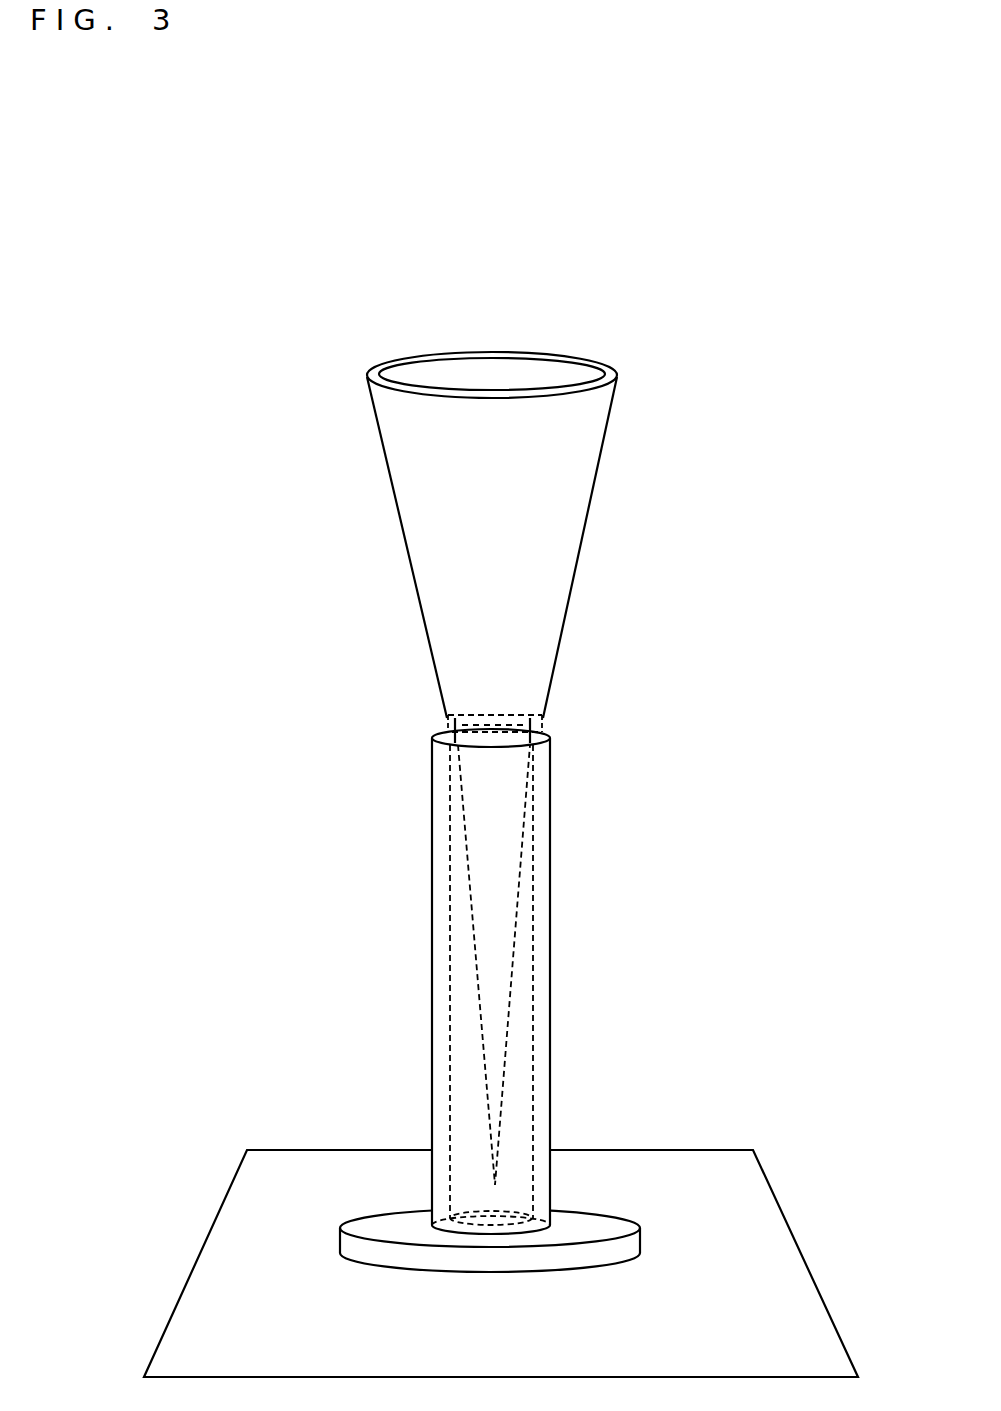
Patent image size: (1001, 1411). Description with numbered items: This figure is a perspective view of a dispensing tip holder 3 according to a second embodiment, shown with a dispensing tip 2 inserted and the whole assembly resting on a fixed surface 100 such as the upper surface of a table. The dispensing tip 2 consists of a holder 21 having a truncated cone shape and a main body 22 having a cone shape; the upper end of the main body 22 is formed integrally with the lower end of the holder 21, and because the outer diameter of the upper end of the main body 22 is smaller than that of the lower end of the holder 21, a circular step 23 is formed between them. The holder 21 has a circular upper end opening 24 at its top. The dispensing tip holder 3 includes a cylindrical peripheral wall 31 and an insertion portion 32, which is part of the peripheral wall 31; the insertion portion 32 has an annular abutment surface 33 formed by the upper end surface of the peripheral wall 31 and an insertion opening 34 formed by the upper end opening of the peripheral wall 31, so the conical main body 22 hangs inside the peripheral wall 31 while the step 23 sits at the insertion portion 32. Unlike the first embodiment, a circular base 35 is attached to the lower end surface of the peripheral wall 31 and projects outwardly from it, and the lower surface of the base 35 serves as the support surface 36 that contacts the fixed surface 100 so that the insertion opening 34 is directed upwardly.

The dispensing tip 2 is at (427, 728).
The dispensing tip holder 3 is at (506, 971).
The holder 21 is at (483, 493).
The main body 22 is at (467, 888).
The circular step 23 is at (453, 732).
The circular upper end opening 24 is at (505, 380).
The peripheral wall 31 is at (550, 932).
The insertion portion 32 is at (607, 675).
The annular abutment surface 33 is at (574, 711).
The insertion opening 34 is at (497, 738).
The circular base 35 is at (458, 1258).
The support surface 36 is at (593, 1268).
The fixed surface 100 is at (720, 1182).